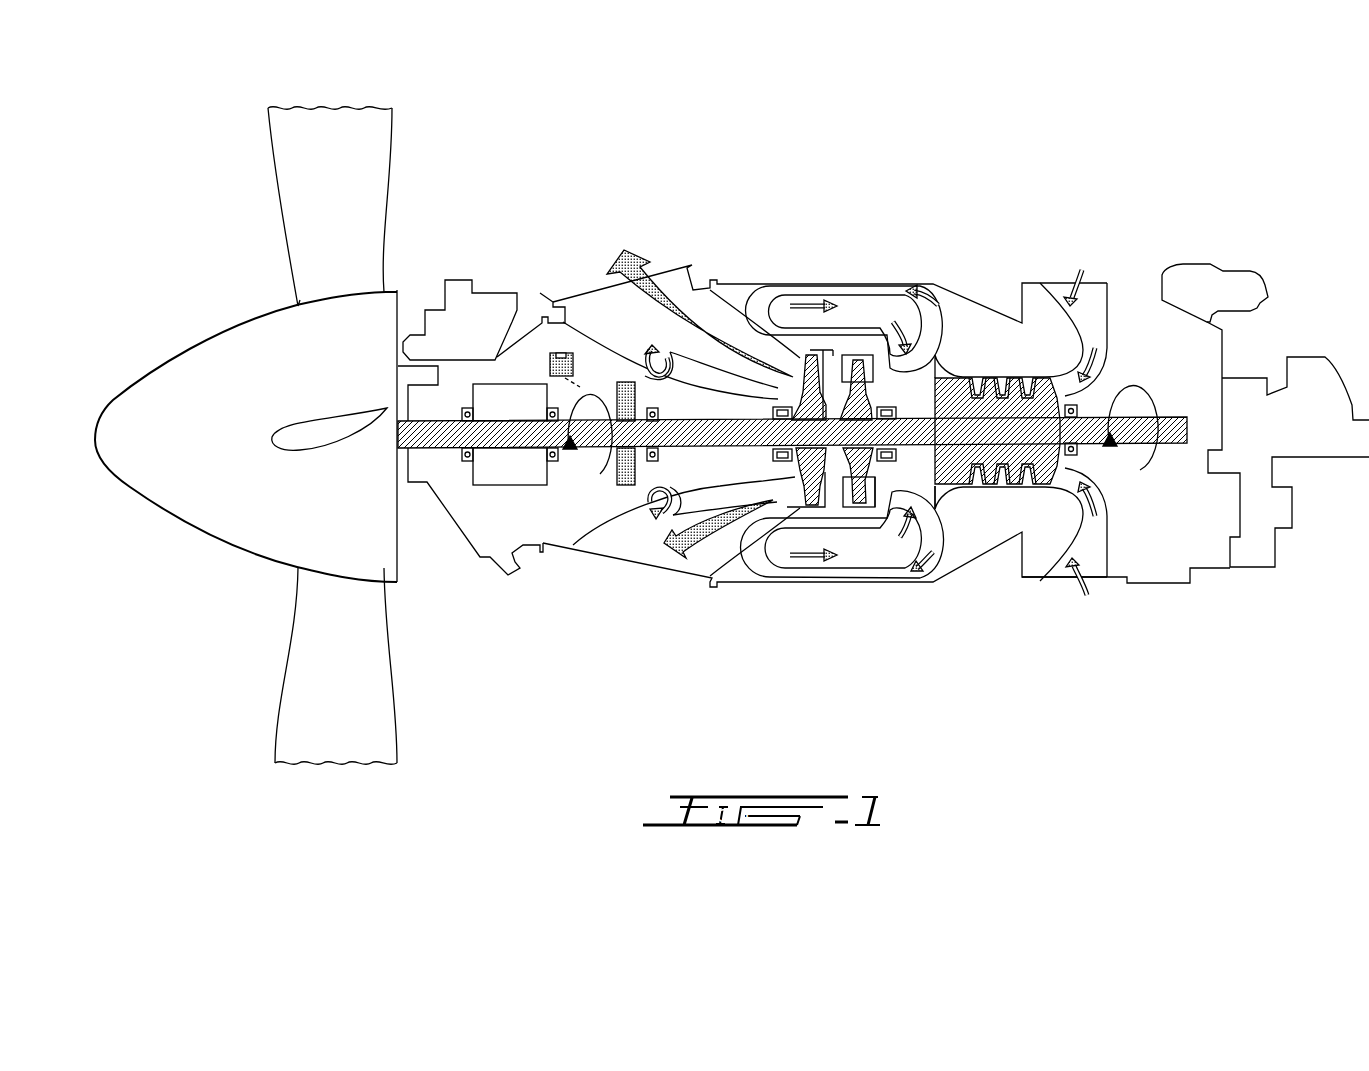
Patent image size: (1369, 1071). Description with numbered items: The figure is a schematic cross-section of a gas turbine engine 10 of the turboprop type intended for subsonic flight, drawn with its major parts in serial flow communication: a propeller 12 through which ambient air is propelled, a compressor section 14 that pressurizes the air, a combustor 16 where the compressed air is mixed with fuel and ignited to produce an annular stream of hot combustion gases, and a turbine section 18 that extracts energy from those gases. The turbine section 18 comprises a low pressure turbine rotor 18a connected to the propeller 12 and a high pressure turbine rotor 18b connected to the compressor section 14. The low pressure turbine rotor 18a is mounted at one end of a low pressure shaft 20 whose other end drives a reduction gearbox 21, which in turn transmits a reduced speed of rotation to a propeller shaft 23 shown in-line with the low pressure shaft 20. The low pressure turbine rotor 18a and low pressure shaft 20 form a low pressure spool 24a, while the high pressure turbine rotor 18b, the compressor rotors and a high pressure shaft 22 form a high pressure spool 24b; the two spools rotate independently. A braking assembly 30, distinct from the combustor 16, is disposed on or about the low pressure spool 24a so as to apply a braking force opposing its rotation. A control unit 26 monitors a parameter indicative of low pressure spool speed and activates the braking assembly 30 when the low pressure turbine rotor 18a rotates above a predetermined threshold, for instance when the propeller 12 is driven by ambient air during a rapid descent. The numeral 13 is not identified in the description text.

The gas turbine engine 10 is at (1048, 160).
The propeller 12 is at (203, 487).
The engine casing 13 is at (918, 283).
The compressor section 14 is at (1015, 490).
The combustor 16 is at (844, 310).
The turbine section 18 is at (795, 488).
The low pressure turbine rotor 18a is at (797, 352).
The high pressure turbine rotor 18b is at (862, 349).
The low pressure shaft 20 is at (691, 449).
The reduction gearbox 21 is at (507, 470).
The high pressure shaft 22 is at (912, 450).
The propeller shaft 23 is at (438, 478).
The low pressure spool 24a is at (691, 398).
The high pressure spool 24b is at (912, 380).
The control unit 26 is at (558, 352).
The braking assembly 30 is at (627, 462).